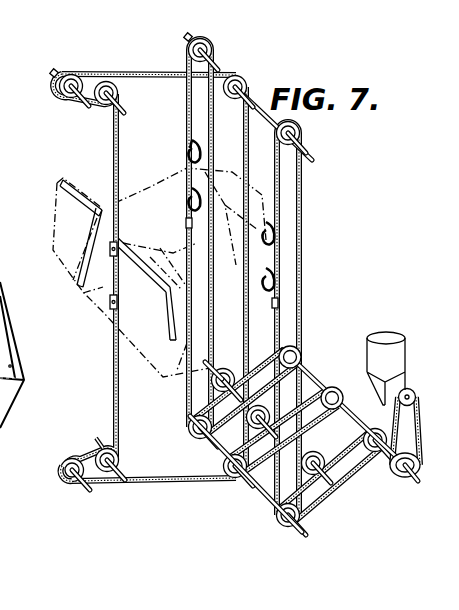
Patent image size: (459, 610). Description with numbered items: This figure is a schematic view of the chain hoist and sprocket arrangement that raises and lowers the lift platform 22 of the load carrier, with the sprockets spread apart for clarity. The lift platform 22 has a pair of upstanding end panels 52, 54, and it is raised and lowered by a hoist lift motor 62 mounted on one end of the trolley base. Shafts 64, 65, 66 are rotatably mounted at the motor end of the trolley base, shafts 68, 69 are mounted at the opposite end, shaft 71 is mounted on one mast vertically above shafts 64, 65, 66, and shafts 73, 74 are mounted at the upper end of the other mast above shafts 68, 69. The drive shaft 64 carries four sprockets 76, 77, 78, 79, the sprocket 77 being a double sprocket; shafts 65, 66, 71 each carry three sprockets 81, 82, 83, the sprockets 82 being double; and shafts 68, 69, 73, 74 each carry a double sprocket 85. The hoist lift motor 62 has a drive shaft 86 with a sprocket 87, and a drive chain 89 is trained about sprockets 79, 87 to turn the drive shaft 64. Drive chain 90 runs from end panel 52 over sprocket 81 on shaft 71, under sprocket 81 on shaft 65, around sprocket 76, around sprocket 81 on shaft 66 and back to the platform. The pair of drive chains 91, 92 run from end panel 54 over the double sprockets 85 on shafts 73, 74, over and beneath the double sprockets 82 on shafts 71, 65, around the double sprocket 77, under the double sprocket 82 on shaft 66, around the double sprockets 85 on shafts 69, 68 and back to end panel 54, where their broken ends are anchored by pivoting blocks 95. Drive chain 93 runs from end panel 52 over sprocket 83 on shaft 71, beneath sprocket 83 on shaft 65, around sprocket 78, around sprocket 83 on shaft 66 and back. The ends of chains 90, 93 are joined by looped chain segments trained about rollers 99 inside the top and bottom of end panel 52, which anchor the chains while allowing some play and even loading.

The lift platform 22 is at (98, 322).
The end panel 52 is at (218, 248).
The end panel 54 is at (95, 300).
The hoist lift motor 62 is at (381, 331).
The drive shaft 64 is at (305, 372).
The shaft 65 is at (215, 382).
The shaft 66 is at (262, 498).
The shaft 68 is at (98, 436).
The shaft 69 is at (58, 476).
The shaft 71 is at (312, 152).
The shaft 73 is at (128, 110).
The shaft 74 is at (68, 100).
The sprocket 76 is at (298, 352).
The double sprocket 77 is at (337, 390).
The sprocket 78 is at (357, 438).
The sprocket 79 is at (403, 478).
The sprocket 81 is at (213, 49).
The double sprocket 82 is at (241, 78).
The sprocket 83 is at (300, 128).
The double sprocket 85 is at (60, 90).
The drive shaft 86 is at (383, 396).
The sprocket 87 is at (393, 421).
The drive chain 89 is at (412, 406).
The drive chain 90 is at (186, 112).
The drive chain 91 is at (242, 133).
The drive chain 92 is at (256, 148).
The drive chain 93 is at (300, 192).
The block 95 is at (118, 265).
The roller 99 is at (197, 162).